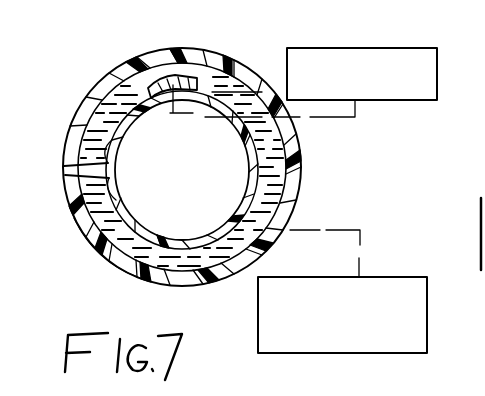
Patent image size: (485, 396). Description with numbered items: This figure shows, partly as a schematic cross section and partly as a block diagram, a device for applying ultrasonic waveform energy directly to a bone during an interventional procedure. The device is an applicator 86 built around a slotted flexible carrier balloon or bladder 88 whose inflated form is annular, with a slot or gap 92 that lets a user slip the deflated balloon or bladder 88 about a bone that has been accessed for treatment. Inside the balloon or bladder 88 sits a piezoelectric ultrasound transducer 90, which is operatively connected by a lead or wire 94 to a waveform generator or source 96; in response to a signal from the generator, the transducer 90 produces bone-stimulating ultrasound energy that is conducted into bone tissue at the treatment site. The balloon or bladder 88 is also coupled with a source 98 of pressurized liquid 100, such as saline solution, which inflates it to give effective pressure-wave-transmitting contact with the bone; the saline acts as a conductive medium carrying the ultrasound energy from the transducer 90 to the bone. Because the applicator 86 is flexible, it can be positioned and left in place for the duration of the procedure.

The applicator 86 is at (250, 50).
The carrier balloon or bladder 88 is at (297, 181).
The piezoelectric ultrasound transducer 90 is at (155, 85).
The slot or gap 92 is at (68, 171).
The lead or wire 94 is at (340, 117).
The waveform generator or source 96 is at (401, 100).
The source of pressurized liquid 98 is at (402, 277).
The pressurized liquid 100 is at (103, 252).